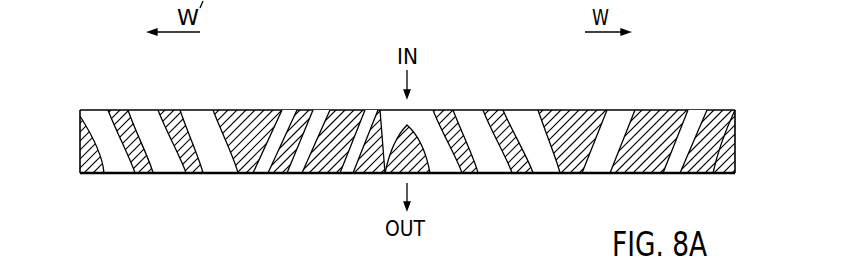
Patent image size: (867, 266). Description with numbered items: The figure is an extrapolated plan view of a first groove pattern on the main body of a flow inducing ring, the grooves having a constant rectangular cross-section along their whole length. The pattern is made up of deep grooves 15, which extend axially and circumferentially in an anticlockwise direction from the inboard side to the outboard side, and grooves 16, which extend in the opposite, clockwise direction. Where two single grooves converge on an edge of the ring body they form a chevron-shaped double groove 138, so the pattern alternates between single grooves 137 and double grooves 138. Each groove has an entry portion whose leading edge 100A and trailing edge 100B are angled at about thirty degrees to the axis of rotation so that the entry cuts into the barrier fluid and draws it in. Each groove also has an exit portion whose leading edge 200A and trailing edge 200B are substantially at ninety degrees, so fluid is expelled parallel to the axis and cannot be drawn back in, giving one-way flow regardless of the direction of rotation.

The groove 15 is at (97, 127).
The groove 16 is at (725, 123).
The leading edge of entry portion 100A is at (122, 112).
The trailing edge of entry portion 100B is at (158, 112).
The double groove 138 is at (388, 128).
The single groove 137 is at (657, 175).
The leading edge of exit portion 200A is at (153, 175).
The trailing edge of exit portion 200B is at (185, 175).